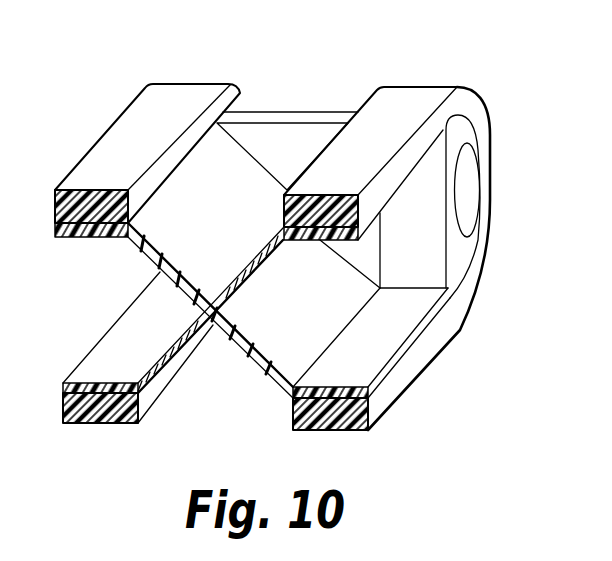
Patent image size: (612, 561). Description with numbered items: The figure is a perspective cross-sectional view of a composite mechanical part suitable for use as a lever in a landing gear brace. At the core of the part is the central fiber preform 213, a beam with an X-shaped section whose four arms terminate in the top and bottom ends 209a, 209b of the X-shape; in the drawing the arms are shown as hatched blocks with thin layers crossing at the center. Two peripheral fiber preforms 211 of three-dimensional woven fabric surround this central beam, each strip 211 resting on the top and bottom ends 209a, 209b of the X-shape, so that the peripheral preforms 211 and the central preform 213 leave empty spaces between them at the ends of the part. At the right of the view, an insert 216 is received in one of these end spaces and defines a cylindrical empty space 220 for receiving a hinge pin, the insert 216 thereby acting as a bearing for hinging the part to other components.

The peripheral fiber preform 211 is at (148, 100).
The insert 216 is at (463, 130).
The cylindrical empty space 220 is at (462, 190).
The top end of the X-shape 209a is at (80, 237).
The bottom end of the X-shape 209b is at (82, 383).
The central fiber preform 213 is at (227, 337).